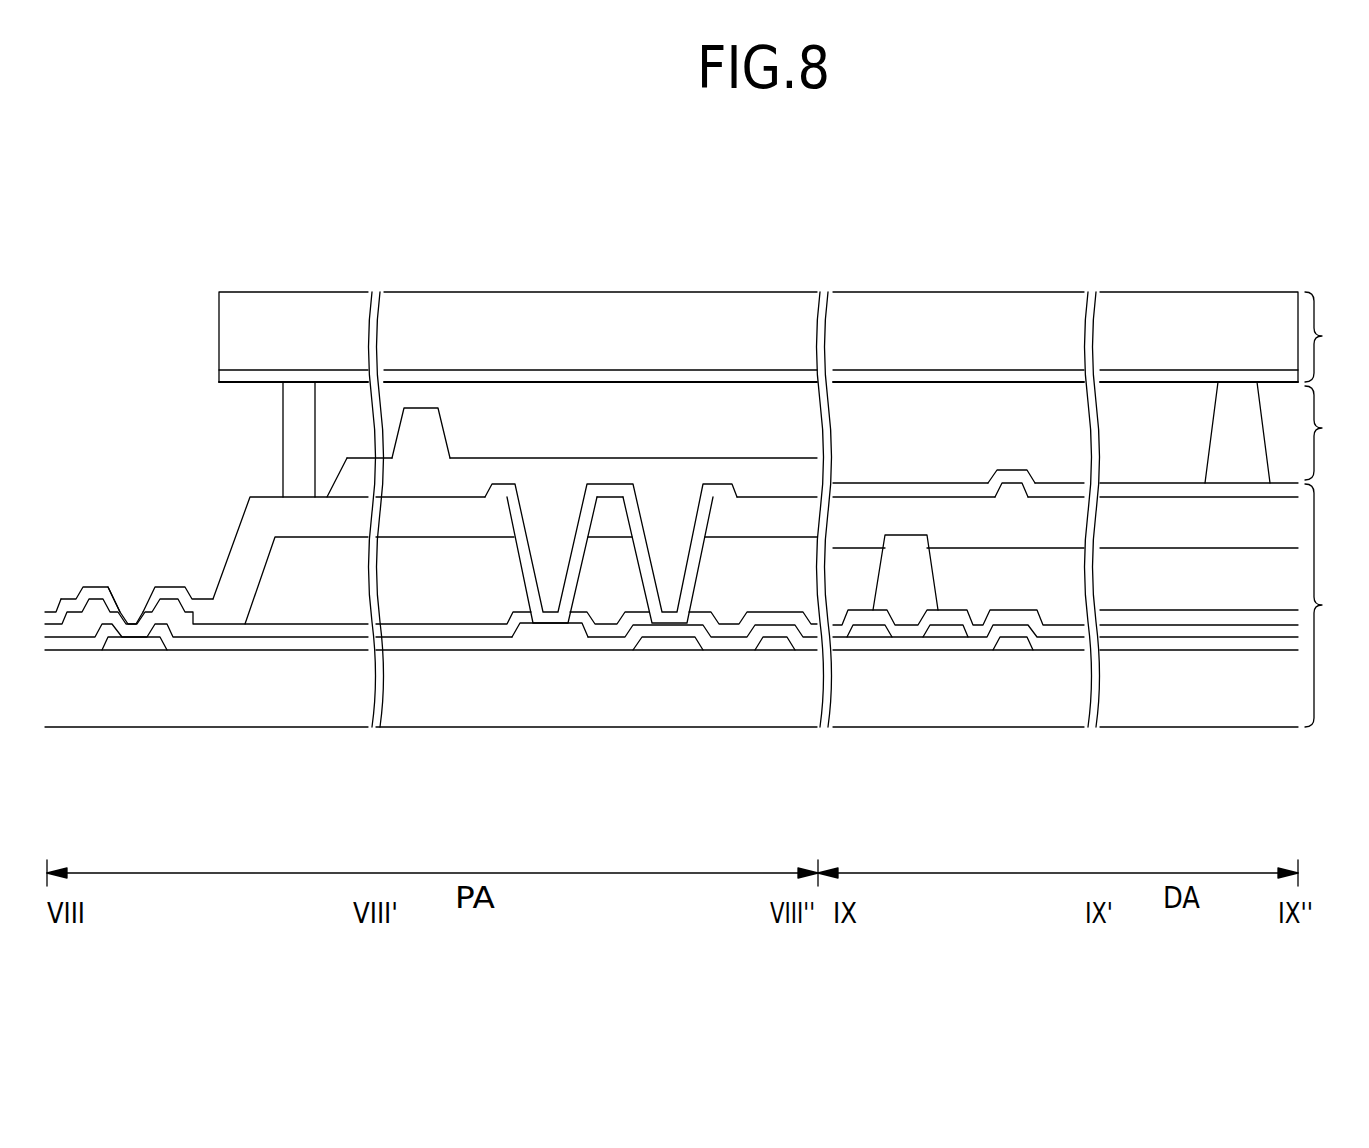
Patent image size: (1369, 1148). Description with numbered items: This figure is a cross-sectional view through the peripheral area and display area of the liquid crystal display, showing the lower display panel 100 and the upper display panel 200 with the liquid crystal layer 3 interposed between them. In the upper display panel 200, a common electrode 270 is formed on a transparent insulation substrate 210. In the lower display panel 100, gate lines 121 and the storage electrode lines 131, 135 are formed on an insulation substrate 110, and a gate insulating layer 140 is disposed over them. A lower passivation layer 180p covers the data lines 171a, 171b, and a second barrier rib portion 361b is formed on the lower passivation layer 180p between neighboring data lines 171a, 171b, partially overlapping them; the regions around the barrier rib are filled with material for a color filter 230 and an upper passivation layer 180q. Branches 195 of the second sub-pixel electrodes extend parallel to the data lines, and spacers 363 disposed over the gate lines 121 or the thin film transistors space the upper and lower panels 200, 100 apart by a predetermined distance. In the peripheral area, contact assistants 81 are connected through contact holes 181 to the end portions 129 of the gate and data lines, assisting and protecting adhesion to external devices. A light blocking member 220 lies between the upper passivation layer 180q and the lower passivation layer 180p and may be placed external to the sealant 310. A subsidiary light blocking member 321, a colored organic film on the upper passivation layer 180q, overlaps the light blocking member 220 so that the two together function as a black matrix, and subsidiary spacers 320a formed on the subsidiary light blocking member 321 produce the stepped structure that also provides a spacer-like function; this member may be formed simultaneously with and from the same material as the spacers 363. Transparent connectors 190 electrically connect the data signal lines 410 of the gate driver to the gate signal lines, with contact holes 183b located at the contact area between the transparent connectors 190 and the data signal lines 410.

The upper display panel 200 is at (790, 306).
The transparent insulation substrate 210 is at (655, 315).
The common electrode 270 is at (532, 377).
The liquid crystal layer 3 is at (773, 364).
The subsidiary spacers 320a is at (420, 400).
The subsidiary light blocking member 321 is at (352, 473).
The sealant 310 is at (283, 424).
The spacers 363 is at (1240, 400).
The branches 195 is at (1010, 490).
The lower display panel 100 is at (703, 615).
The insulation substrate 110 is at (73, 700).
The end portions 129 is at (120, 648).
The gate insulating layer 140 is at (257, 643).
The lower passivation layer 180p is at (200, 630).
The upper passivation layer 180q is at (472, 512).
The contact holes 181 is at (123, 600).
The contact assistants 81 is at (173, 600).
The light blocking member 220 is at (310, 595).
The storage electrode line 131 is at (672, 640).
The data signal lines 410 is at (545, 640).
The contact holes 183b is at (582, 562).
The transparent connectors 190 is at (612, 490).
The gate lines 121 is at (768, 650).
The storage electrode line 135 is at (1020, 648).
The data line 171a is at (865, 640).
The data line 171b is at (940, 640).
The second barrier rib portion 361b is at (905, 565).
The color filter 230 is at (1200, 585).